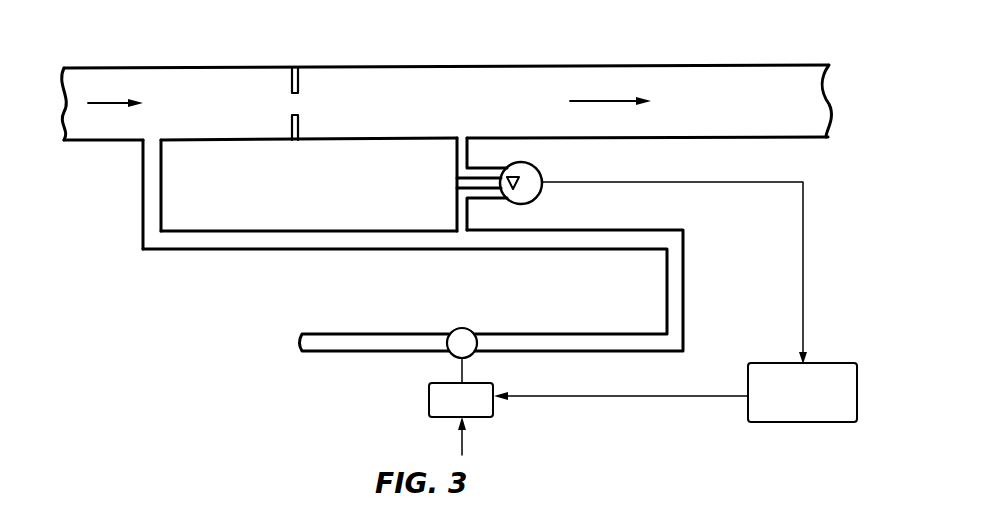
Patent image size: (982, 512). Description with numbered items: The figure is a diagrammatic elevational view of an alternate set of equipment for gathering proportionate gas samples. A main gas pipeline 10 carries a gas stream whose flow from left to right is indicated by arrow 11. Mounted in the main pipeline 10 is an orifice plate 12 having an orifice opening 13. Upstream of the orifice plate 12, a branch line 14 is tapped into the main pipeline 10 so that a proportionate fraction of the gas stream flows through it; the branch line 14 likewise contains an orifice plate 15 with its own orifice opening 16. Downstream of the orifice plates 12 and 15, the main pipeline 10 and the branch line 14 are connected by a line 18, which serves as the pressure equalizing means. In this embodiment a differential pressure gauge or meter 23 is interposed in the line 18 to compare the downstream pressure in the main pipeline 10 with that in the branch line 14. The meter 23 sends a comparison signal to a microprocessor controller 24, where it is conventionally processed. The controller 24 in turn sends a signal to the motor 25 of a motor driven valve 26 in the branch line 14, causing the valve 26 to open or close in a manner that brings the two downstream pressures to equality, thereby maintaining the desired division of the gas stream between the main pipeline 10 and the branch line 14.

The main gas pipeline 10 is at (194, 66).
The arrow 11 is at (100, 103).
The orifice plate 12 is at (299, 80).
The orifice opening 13 is at (300, 116).
The branch line 14 is at (142, 198).
The orifice plate 15 is at (290, 230).
The orifice opening 16 is at (293, 250).
The line 18 is at (457, 163).
The differential pressure gauge 23 is at (520, 162).
The microprocessor controller 24 is at (772, 363).
The motor 25 is at (495, 416).
The motor driven valve 26 is at (471, 331).